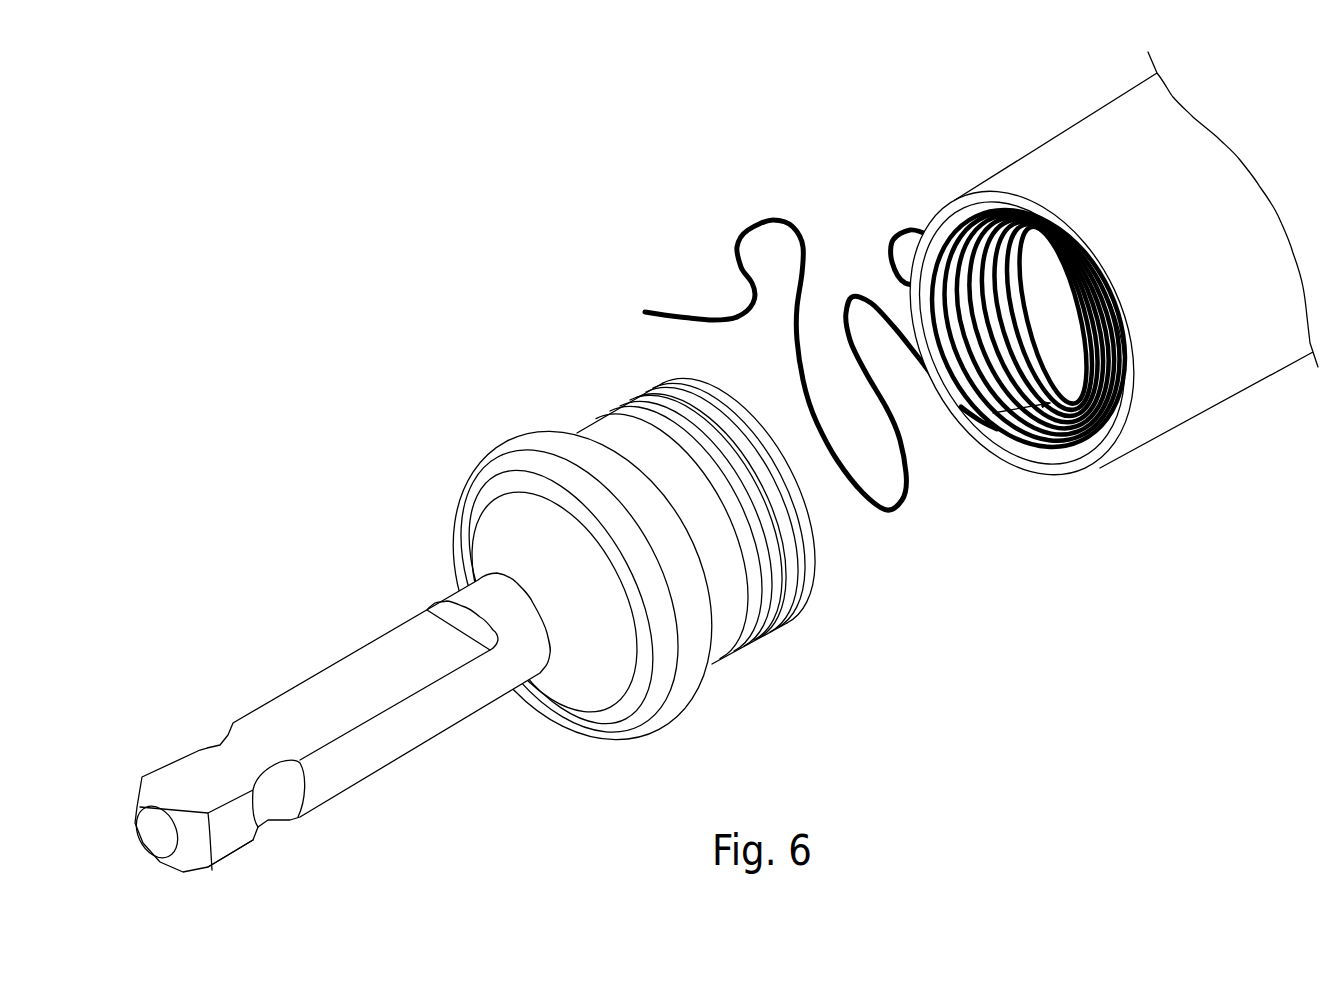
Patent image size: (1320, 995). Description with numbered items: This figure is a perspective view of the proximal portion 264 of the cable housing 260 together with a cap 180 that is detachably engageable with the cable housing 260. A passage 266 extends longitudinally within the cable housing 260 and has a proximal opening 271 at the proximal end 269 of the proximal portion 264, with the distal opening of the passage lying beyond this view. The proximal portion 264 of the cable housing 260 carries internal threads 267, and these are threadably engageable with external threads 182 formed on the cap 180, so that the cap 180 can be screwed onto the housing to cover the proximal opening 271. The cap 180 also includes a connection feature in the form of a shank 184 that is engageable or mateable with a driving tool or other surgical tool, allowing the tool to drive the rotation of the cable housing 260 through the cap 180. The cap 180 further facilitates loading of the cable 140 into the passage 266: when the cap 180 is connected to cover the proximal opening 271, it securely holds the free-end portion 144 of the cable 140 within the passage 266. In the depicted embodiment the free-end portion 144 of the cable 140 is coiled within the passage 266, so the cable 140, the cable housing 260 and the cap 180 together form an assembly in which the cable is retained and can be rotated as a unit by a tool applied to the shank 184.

The cap 180 is at (353, 353).
The external threads 182 is at (578, 432).
The connection feature (shank) 184 is at (342, 620).
The cable 140 is at (816, 203).
The free-end portion of the cable 144 is at (716, 318).
The cable housing 260 is at (1050, 75).
The proximal portion of the cable housing 264 is at (938, 135).
The passage 266 is at (1008, 437).
The internal threads 267 is at (987, 421).
The proximal end 269 is at (1087, 467).
The proximal opening 271 is at (1027, 482).